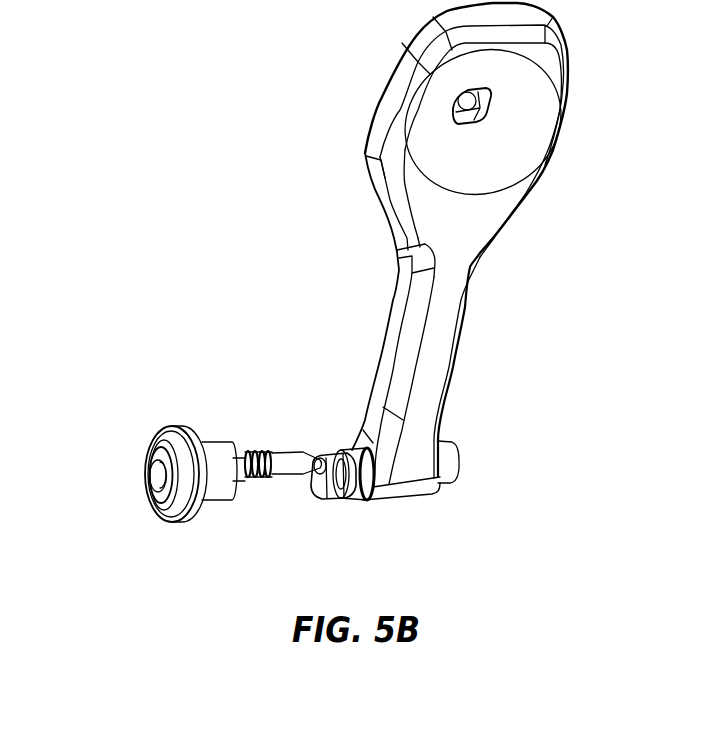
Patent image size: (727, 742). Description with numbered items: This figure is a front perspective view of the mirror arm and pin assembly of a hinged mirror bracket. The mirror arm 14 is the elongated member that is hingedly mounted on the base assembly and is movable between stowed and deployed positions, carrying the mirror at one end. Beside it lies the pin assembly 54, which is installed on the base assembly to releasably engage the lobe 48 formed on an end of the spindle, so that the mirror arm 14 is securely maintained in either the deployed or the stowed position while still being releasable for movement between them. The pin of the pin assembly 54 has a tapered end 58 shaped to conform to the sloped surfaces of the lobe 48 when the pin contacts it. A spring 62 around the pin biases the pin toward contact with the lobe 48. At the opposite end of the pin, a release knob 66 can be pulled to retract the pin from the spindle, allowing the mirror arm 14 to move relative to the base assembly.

The mirror arm 14 is at (465, 307).
The lobe 48 is at (317, 490).
The pin assembly 54 is at (262, 432).
The tapered end 58 is at (317, 447).
The spring 62 is at (263, 478).
The release knob 66 is at (147, 473).